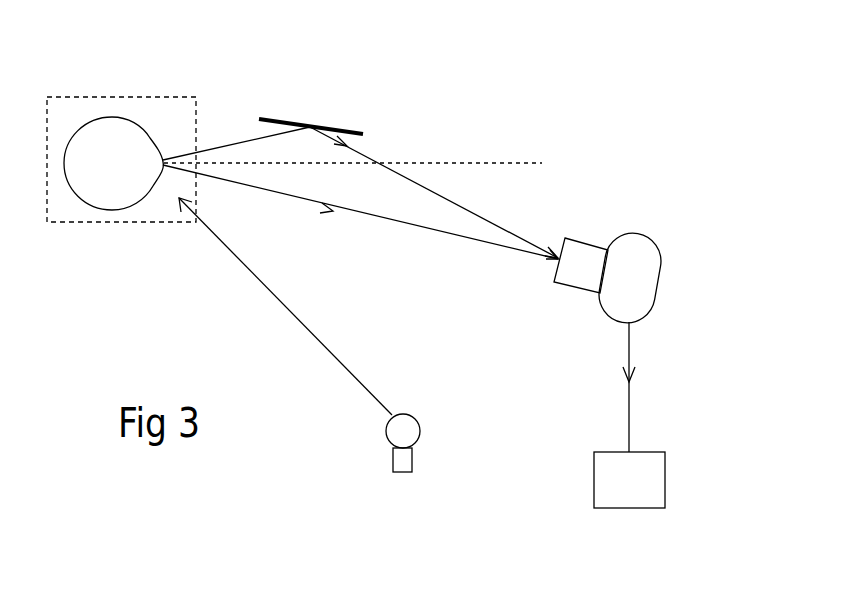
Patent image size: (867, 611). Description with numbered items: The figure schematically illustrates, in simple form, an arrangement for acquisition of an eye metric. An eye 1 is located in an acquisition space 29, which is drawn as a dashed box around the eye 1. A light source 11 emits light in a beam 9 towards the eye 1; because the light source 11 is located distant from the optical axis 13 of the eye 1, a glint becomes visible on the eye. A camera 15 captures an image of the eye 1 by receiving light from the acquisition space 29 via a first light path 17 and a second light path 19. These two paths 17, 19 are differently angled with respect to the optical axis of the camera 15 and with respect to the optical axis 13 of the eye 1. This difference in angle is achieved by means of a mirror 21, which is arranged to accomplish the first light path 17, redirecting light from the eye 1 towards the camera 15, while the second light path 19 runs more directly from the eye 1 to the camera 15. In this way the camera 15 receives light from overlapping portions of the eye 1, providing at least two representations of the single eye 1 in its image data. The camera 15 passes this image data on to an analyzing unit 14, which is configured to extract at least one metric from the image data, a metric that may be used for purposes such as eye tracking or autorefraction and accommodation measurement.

The eye 1 is at (120, 167).
The acquisition space 29 is at (133, 97).
The mirror 21 is at (273, 118).
The optical axis of the eye 13 is at (417, 162).
The first light path 17 is at (470, 210).
The second light path 19 is at (426, 227).
The beam 9 is at (275, 292).
The light source 11 is at (411, 432).
The camera 15 is at (643, 240).
The analyzing unit 14 is at (665, 452).